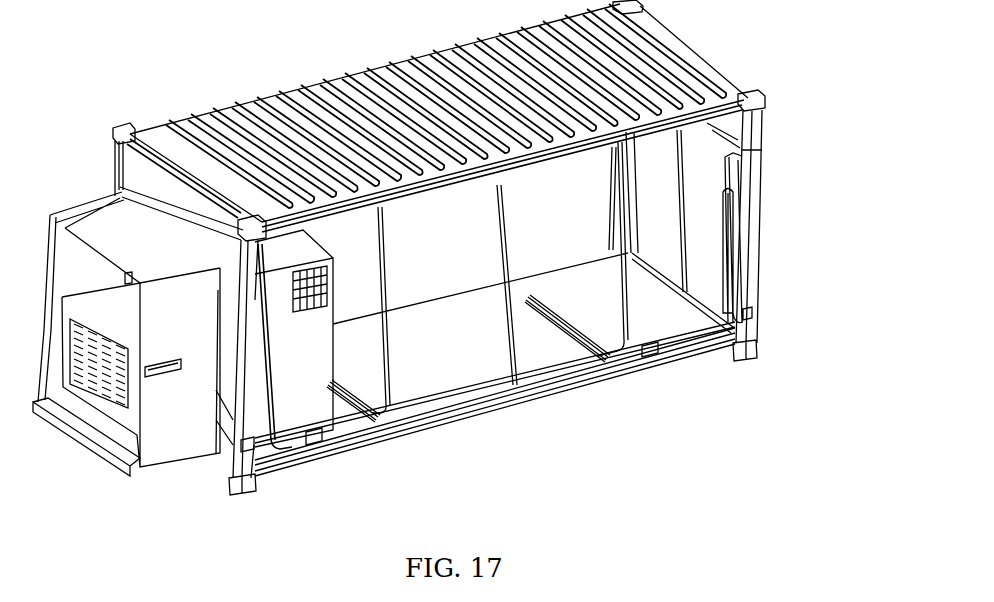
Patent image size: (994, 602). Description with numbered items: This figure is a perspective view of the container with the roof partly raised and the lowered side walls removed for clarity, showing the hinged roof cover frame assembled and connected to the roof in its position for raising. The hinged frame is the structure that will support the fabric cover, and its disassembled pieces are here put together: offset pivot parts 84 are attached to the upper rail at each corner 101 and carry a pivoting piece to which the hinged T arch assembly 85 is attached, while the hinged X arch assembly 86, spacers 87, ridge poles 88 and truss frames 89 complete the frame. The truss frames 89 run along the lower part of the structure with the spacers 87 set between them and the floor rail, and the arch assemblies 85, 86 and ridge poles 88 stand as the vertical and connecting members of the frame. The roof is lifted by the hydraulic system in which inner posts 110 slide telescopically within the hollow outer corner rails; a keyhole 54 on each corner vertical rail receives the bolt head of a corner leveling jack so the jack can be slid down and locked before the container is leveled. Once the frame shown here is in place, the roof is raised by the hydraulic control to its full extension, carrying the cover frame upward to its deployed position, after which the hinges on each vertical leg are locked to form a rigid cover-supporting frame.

The keyhole 54 is at (753, 313).
The offset pivot parts 84 is at (722, 110).
The hinged T arch assembly 85 is at (268, 393).
The hinged X arch assembly 86 is at (388, 353).
The spacers 87 is at (305, 434).
The ridge poles 88 is at (512, 316).
The truss frames 89 is at (430, 410).
The corner 101 is at (262, 240).
The inner posts 110 is at (115, 154).